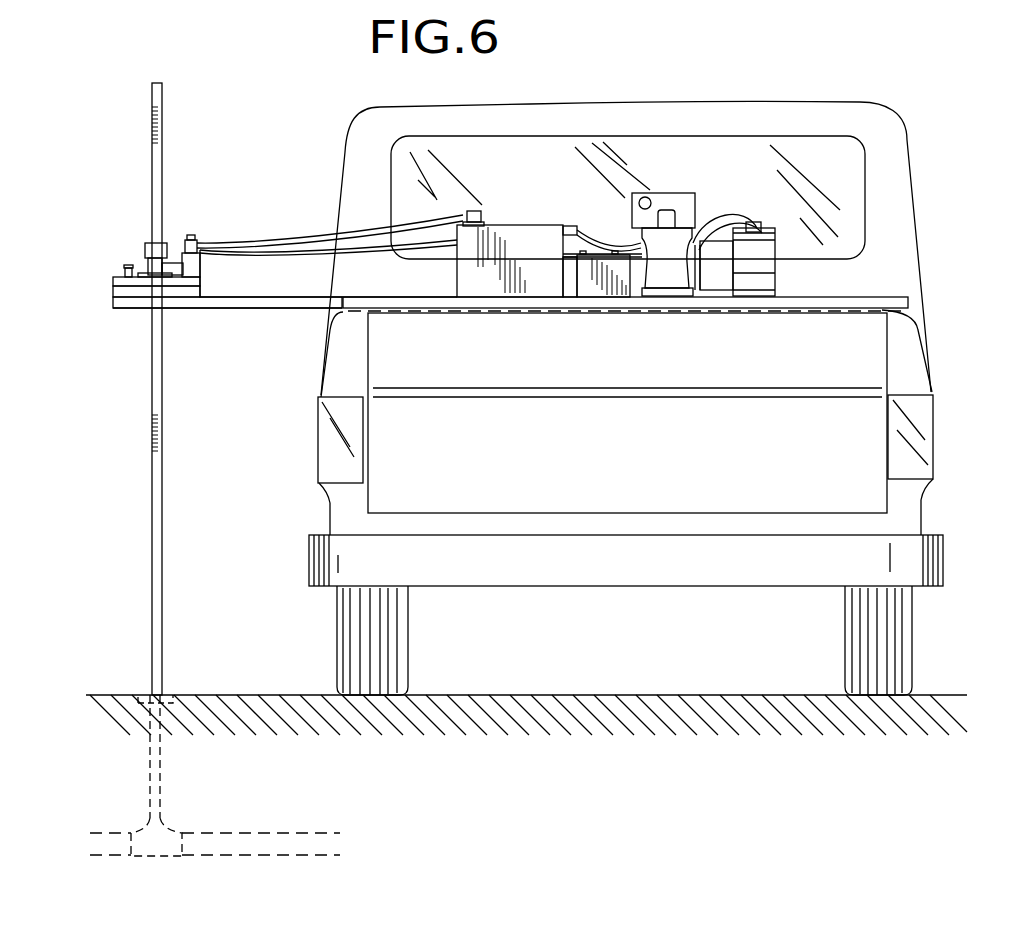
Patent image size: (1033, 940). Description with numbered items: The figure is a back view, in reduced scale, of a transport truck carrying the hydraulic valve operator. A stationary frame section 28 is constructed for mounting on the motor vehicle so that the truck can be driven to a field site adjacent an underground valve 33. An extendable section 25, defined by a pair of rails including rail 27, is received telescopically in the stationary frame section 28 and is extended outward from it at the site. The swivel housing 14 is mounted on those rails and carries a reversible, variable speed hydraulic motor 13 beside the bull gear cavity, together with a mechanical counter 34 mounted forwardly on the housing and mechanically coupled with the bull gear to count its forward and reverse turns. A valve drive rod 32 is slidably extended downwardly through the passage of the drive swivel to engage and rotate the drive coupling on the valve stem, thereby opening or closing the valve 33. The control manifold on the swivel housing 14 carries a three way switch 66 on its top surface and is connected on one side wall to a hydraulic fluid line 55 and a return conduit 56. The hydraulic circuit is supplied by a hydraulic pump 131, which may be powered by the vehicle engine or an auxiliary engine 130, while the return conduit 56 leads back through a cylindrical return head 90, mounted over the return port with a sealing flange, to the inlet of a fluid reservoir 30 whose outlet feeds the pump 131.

The hydraulic motor 13 is at (163, 243).
The swivel housing 14 is at (109, 289).
The extendable section 25 is at (213, 311).
The rail 27 is at (288, 310).
The stationary frame section 28 is at (543, 315).
The fluid reservoir 30 is at (540, 221).
The valve drive rod 32 is at (167, 452).
The valve 33 is at (165, 824).
The mechanical counter 34 is at (128, 266).
The hydraulic fluid line 55 is at (297, 254).
The return conduit 56 is at (289, 238).
The three way switch 66 is at (193, 236).
The cylindrical return head 90 is at (473, 212).
The auxiliary engine 130 is at (686, 192).
The hydraulic pump 131 is at (779, 278).